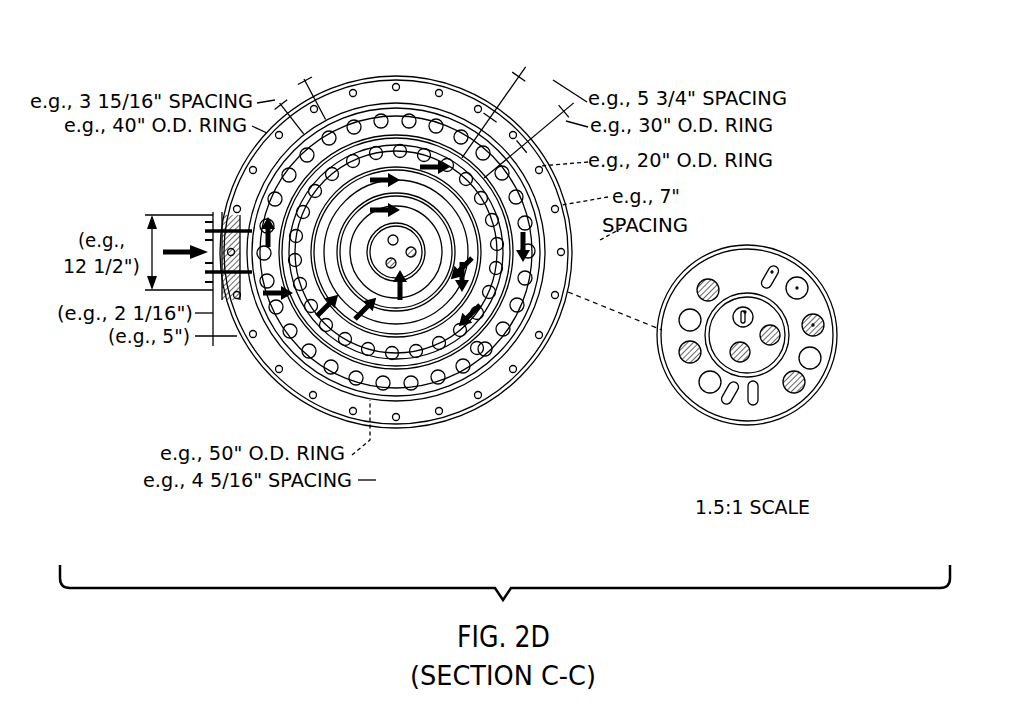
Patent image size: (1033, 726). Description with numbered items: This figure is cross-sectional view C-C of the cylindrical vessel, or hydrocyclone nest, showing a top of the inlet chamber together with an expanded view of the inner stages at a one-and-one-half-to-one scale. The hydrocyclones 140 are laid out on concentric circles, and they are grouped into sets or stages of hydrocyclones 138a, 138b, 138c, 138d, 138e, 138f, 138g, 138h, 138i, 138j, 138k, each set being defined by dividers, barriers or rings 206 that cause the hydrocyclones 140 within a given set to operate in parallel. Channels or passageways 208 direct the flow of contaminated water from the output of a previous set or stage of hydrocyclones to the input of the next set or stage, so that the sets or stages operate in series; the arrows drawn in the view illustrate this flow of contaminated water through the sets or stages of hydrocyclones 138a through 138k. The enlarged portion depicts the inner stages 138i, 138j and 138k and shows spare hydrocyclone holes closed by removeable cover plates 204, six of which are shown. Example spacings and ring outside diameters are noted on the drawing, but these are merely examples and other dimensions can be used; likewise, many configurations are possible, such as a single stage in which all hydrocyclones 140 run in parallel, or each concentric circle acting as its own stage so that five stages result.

The set or stage of hydrocyclones 138a is at (438, 130).
The set or stage of hydrocyclones 138b is at (318, 363).
The set or stage of hydrocyclones 138c is at (370, 172).
The set or stage of hydrocyclones 138d is at (487, 297).
The set or stage of hydrocyclones 138e is at (365, 355).
The set or stage of hydrocyclones 138f is at (337, 197).
The set or stage of hydrocyclones 138g is at (417, 180).
The set or stage of hydrocyclones 138h is at (427, 317).
The inner stage of hydrocyclones 138i is at (347, 232).
The inner stage of hydrocyclones 138j is at (433, 277).
The inner stage of hydrocyclones 138k is at (377, 252).
The hydrocyclone 140 is at (477, 350).
The removeable cover plate 204 is at (815, 323).
The ring 206 is at (746, 310).
The channel or passageway 208 is at (774, 270).